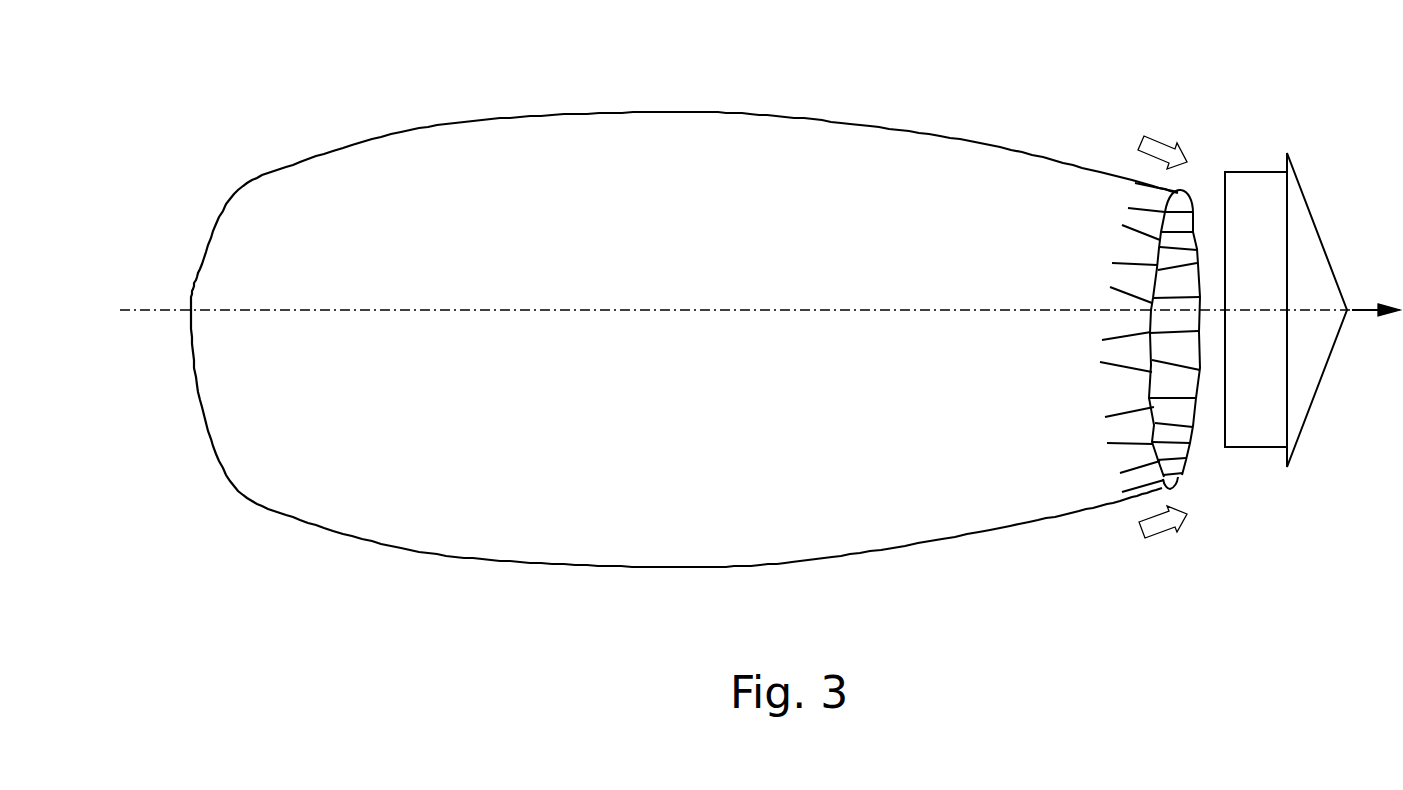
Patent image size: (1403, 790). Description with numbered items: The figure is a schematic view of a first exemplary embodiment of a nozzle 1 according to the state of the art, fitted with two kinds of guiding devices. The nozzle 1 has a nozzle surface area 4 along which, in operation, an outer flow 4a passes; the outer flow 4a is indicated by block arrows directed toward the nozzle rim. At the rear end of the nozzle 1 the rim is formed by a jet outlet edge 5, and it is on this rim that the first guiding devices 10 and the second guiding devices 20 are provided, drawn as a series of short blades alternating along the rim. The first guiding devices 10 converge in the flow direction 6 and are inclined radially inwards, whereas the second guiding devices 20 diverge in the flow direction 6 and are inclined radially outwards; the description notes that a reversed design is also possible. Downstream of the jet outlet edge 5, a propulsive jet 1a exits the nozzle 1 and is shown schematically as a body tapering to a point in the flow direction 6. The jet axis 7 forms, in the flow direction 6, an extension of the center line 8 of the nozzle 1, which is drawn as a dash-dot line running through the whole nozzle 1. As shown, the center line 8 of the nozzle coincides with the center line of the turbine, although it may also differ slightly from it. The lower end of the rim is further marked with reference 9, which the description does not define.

The nozzle 1 is at (798, 102).
The propulsive jet 1a is at (1256, 172).
The nozzle surface area 4 is at (1079, 198).
The outer flow 4a is at (1156, 141).
The jet outlet edge 5 is at (1185, 188).
The flow direction 6 is at (1376, 300).
The jet axis 7 is at (1231, 310).
The center line 8 is at (538, 310).
The lower rotor tip 9 is at (1172, 494).
The first guiding devices 10 is at (1122, 247).
The second guiding devices 20 is at (1122, 280).